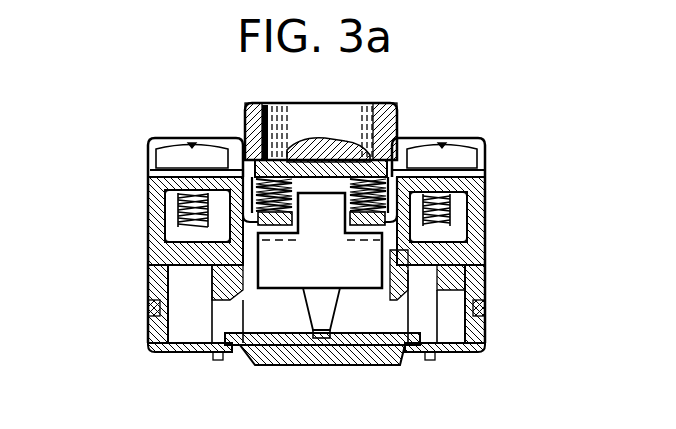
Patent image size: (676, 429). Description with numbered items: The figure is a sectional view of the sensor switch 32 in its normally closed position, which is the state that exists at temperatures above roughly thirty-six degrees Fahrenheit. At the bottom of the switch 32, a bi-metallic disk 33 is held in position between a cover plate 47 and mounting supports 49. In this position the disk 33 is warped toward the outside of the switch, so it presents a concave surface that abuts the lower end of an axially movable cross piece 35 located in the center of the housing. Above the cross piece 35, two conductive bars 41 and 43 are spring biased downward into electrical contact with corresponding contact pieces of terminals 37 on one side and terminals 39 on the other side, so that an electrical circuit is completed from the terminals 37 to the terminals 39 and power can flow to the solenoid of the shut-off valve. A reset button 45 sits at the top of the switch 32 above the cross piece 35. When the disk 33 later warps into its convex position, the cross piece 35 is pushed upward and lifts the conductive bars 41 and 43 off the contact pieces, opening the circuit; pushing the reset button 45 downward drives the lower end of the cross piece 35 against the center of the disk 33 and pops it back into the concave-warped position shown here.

The switch 32 is at (460, 96).
The bi-metallic disk 33 is at (305, 362).
The cross piece 35 is at (358, 290).
The terminals 37 is at (168, 157).
The terminals 39 is at (470, 157).
The conductive bar 41 is at (252, 222).
The conductive bar 43 is at (390, 222).
The reset button 45 is at (302, 113).
The cover plate 47 is at (186, 357).
The mounting supports 49 is at (165, 318).